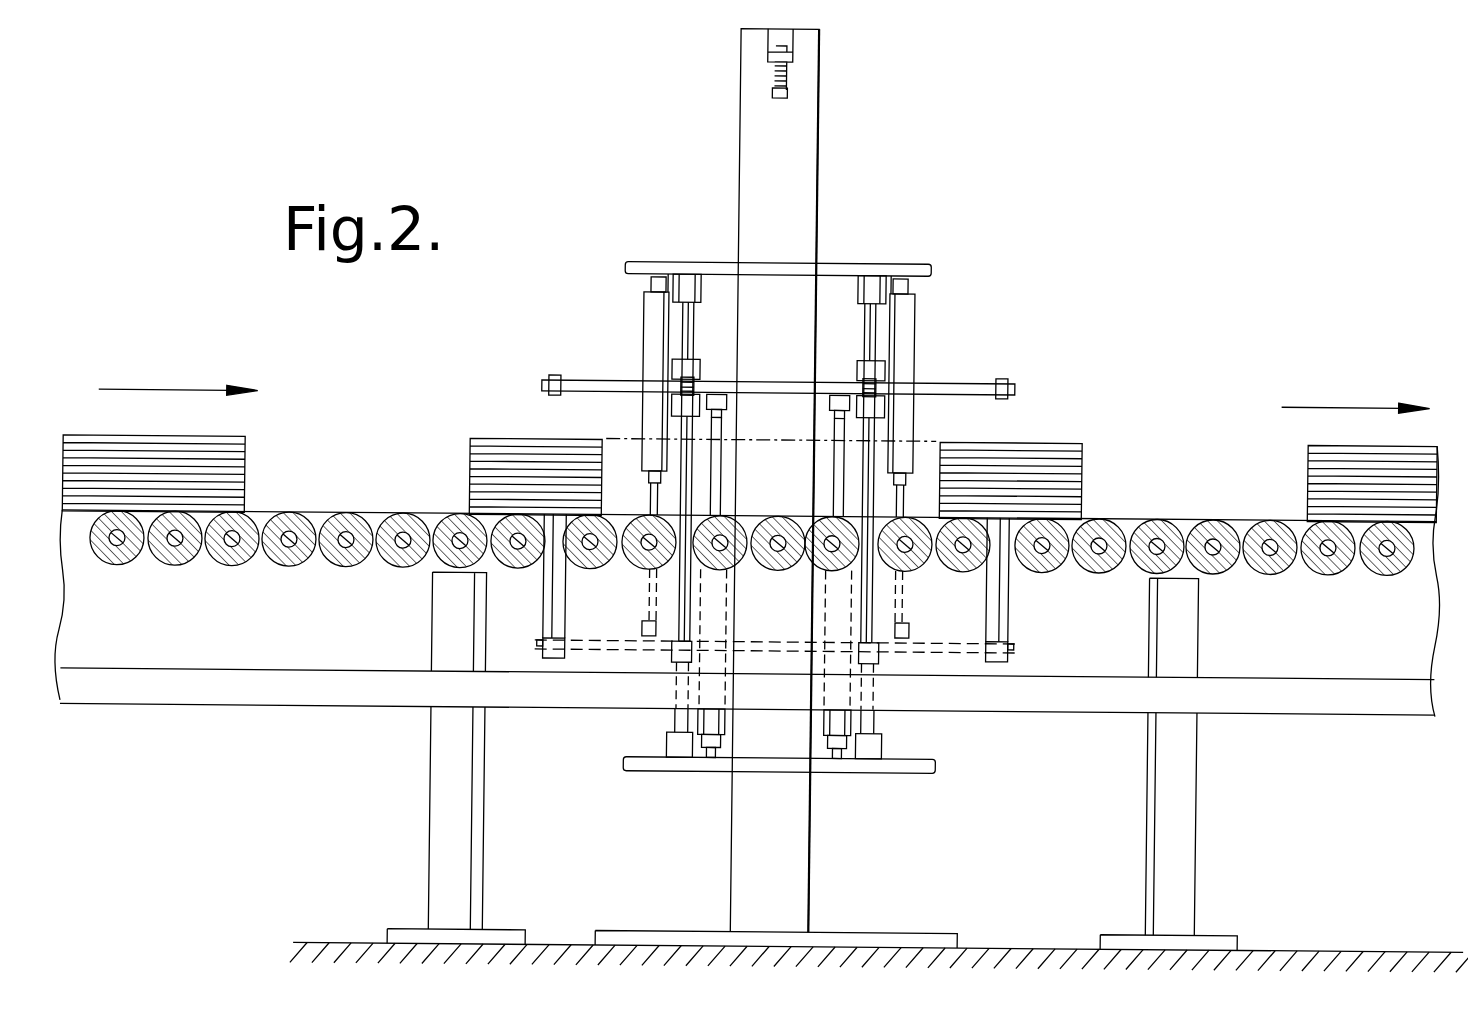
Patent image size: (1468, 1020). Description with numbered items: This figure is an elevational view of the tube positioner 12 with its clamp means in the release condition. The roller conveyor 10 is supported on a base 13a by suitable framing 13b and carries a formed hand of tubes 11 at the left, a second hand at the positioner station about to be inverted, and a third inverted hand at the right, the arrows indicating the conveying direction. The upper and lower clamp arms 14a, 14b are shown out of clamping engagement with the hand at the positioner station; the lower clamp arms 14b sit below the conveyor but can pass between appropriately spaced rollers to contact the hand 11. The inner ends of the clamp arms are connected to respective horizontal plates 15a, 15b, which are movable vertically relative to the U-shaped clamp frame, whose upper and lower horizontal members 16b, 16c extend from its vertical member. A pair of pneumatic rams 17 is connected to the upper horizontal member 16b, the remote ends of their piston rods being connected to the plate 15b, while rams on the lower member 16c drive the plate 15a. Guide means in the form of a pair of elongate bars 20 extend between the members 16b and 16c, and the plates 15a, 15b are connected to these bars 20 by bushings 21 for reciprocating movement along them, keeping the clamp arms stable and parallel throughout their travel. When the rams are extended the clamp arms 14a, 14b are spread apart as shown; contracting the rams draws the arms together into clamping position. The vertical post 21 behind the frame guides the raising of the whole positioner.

The conveyor 10 is at (300, 582).
The hand of tubes 11 is at (1066, 440).
The tube positioner 12 is at (964, 278).
The base 13a is at (342, 941).
The framing 13b is at (499, 802).
The upper clamp arms 14a is at (683, 379).
The lower clamp arms 14b is at (679, 646).
The horizontal plate 15a is at (596, 394).
The horizontal plate 15b is at (601, 658).
The upper horizontal member 16b is at (854, 261).
The lower horizontal member 16c is at (926, 774).
The pneumatic rams 17 is at (638, 302).
The elongate bars 20 is at (687, 323).
The bushings 21 is at (815, 164).